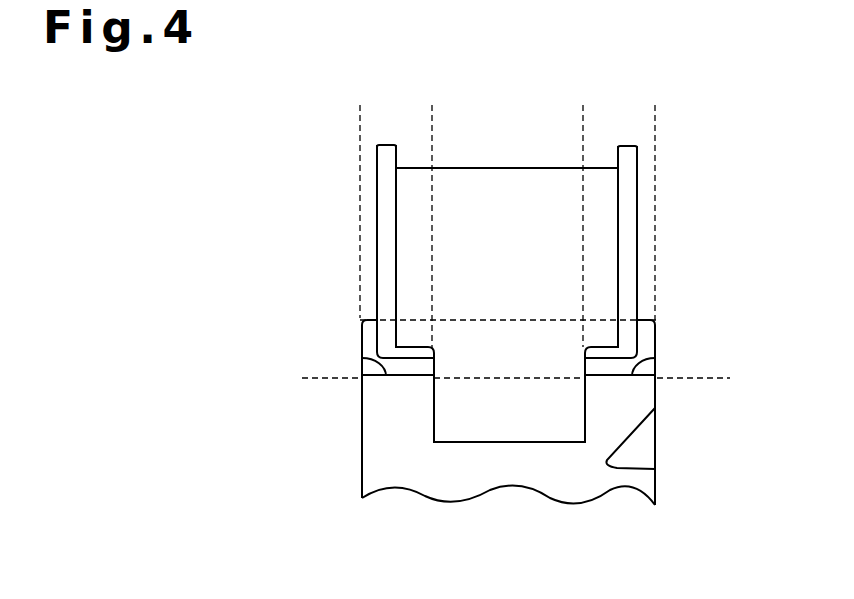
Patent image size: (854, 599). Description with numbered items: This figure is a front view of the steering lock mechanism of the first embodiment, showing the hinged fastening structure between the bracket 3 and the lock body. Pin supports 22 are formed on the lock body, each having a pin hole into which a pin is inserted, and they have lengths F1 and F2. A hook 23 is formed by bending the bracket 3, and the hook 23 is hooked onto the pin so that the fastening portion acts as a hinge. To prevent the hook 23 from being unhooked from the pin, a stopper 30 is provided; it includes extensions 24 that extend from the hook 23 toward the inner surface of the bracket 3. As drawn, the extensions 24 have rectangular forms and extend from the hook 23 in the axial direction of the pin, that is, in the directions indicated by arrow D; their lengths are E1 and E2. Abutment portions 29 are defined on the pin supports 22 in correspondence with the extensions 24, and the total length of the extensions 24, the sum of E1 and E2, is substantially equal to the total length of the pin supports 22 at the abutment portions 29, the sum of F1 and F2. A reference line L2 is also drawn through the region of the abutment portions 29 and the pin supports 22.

The bracket 3 is at (450, 240).
The pin supports 22 is at (361, 390).
The hook 23 is at (462, 427).
The extensions 24 is at (362, 323).
The abutment portions 29 is at (362, 355).
The stopper 30 is at (638, 314).
The reference line L2 is at (532, 380).
The length of extension E1 is at (432, 113).
The length of extension E2 is at (655, 113).
The length of pin support F1 is at (363, 402).
The length of pin support F2 is at (586, 402).
The arrow indicating axial direction of pin D is at (625, 565).